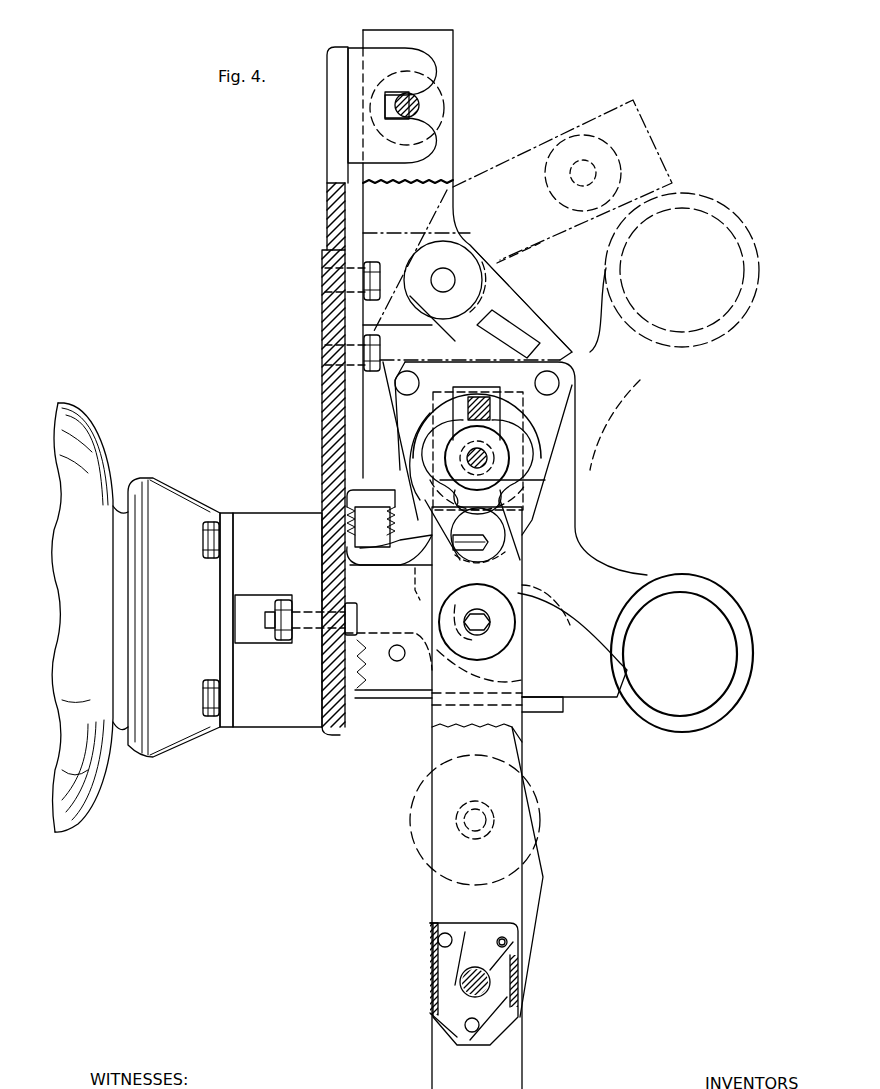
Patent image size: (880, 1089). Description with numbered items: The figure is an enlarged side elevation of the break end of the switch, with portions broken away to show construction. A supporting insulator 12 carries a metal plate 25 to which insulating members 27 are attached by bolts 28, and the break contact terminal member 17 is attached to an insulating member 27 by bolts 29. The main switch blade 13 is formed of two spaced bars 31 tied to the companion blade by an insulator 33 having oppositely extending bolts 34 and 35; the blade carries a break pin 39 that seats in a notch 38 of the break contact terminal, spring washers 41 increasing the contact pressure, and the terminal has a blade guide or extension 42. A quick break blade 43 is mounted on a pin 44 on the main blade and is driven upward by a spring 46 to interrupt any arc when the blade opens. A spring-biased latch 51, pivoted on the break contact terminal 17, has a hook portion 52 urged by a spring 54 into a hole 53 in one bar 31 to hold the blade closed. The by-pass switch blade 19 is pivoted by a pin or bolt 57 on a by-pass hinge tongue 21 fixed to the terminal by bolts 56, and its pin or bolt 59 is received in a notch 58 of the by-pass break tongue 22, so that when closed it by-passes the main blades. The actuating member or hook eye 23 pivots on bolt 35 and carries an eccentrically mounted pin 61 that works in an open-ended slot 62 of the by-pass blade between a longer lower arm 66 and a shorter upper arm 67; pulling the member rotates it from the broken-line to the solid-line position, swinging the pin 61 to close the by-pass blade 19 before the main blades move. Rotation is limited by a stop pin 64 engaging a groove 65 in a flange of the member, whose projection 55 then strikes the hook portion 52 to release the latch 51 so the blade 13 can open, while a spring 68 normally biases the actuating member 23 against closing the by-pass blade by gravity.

The supporting insulator 12 is at (163, 745).
The switch blade 13 is at (413, 1072).
The break contact terminal member 17 is at (323, 432).
The by-pass switch blade 19 is at (454, 82).
The by-pass hinge tongue 21 is at (362, 352).
The by-pass break tongue 22 is at (432, 150).
The actuating member or hook eye 23 is at (745, 310).
The metal plate 25 is at (232, 516).
The insulating member 27 is at (305, 727).
The bolt 28 is at (210, 521).
The bolt 29 is at (357, 620).
The bar 31 is at (508, 1080).
The insulator 33 is at (410, 462).
The bolt 34 is at (458, 817).
The bolt 35 is at (530, 500).
The notch 38 is at (498, 612).
The bolt or pin 39 is at (464, 622).
The spring washer 41 is at (495, 648).
The blade guide or extension 42 is at (563, 705).
The quick break blade 43 is at (538, 912).
The pin 44 is at (460, 982).
The spring 46 is at (490, 1000).
The spring-biased latch 51 is at (400, 562).
The hook portion 52 is at (485, 543).
The hole 53 is at (490, 552).
The spring 54 is at (392, 492).
The projection 55 is at (428, 582).
The bolt 56 is at (378, 270).
The pin or bolt 57 is at (449, 276).
The notch 58 is at (385, 100).
The pin or bolt 59 is at (419, 105).
The eccentrically mounted pin 61 is at (553, 388).
The open-ended slot 62 is at (497, 323).
The stop pin 64 is at (492, 408).
The groove 65 is at (500, 453).
The lower arm 66 is at (497, 352).
The upper arm 67 is at (548, 333).
The spring 68 is at (505, 520).